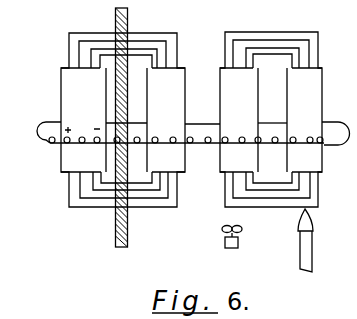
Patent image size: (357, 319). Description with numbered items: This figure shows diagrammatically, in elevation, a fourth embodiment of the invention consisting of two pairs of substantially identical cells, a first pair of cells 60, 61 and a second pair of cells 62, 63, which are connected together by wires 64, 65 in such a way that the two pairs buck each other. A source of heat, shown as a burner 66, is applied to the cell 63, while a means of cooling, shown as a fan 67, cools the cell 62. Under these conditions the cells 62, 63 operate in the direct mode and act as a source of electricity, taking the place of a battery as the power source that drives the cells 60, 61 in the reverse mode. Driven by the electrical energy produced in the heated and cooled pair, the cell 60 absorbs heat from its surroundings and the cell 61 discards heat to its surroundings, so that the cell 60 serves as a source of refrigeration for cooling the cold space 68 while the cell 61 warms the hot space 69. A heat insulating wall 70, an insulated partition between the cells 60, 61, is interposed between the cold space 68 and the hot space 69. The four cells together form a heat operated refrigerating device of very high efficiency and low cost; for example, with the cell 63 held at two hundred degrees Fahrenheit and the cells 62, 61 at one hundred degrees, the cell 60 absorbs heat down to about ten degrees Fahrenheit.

The cell 60 is at (77, 90).
The cell 61 is at (176, 86).
The cell 62 is at (229, 94).
The cell 63 is at (312, 85).
The wire 64 is at (198, 123).
The wire 65 is at (202, 147).
The burner 66 is at (307, 242).
The fan 67 is at (238, 243).
The cold space 68 is at (104, 196).
The hot space 69 is at (248, 203).
The heat insulating wall 70 is at (117, 230).